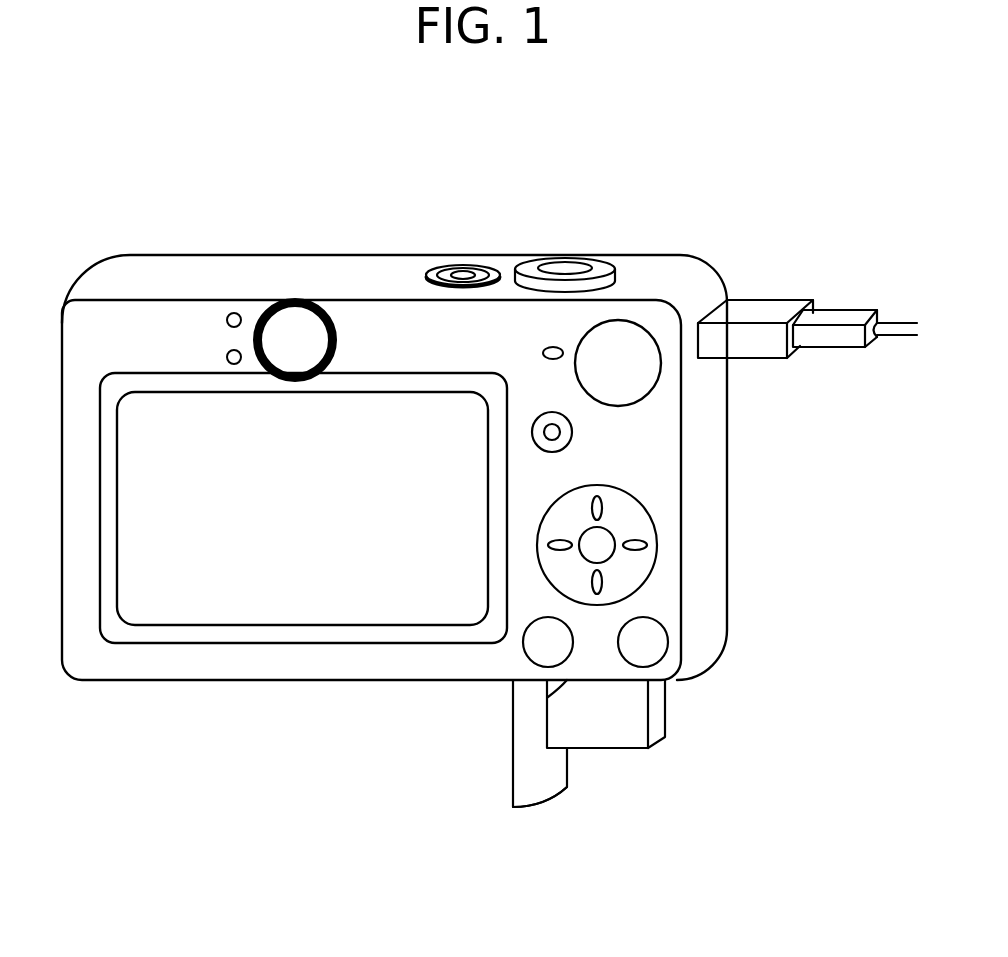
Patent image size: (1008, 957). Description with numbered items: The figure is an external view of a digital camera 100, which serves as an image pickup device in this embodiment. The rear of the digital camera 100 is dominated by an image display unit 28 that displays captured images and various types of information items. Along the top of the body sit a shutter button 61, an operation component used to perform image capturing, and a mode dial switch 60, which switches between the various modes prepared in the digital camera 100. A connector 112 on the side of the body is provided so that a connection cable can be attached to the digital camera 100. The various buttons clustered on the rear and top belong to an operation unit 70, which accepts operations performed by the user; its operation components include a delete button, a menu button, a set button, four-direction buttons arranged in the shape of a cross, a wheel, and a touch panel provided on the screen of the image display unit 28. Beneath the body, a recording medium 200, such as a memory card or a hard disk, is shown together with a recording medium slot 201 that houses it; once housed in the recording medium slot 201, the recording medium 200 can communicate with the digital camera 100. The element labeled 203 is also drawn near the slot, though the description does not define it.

The digital camera 100 is at (140, 728).
The image display unit 28 is at (190, 417).
The operation unit 70 is at (467, 267).
The shutter button 61 is at (563, 265).
The mode dial switch 60 is at (635, 340).
The connector 112 is at (755, 298).
The recording medium 200 is at (633, 715).
The recording medium slot 201 is at (547, 707).
The lid 203 is at (543, 810).